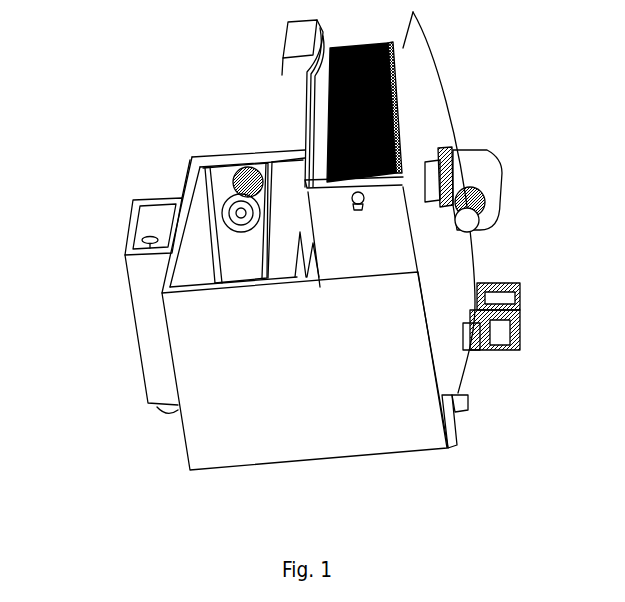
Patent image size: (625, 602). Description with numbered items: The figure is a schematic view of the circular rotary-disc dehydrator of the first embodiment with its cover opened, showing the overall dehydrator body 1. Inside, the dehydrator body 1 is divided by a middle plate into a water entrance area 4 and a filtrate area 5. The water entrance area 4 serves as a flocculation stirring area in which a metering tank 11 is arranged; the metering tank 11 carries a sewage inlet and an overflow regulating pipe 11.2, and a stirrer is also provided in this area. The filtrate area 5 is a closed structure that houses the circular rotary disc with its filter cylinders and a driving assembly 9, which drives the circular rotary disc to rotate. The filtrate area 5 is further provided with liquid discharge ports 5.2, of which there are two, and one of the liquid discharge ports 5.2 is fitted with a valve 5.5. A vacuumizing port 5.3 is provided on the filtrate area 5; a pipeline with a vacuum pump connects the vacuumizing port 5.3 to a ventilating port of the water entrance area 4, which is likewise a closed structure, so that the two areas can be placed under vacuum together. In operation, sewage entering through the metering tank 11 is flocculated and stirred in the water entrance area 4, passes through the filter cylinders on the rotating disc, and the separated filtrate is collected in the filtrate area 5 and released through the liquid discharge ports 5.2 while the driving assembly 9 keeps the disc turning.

The dehydrator body 1 is at (146, 455).
The water entrance area 4 is at (215, 227).
The filtrate area 5 is at (398, 117).
The liquid discharge ports 5.2 is at (473, 330).
The vacuumizing port 5.3 is at (356, 204).
The valve 5.5 is at (498, 338).
The driving assembly 9 is at (460, 182).
The metering tank 11 is at (111, 258).
The overflow regulating pipe 11.2 is at (148, 238).